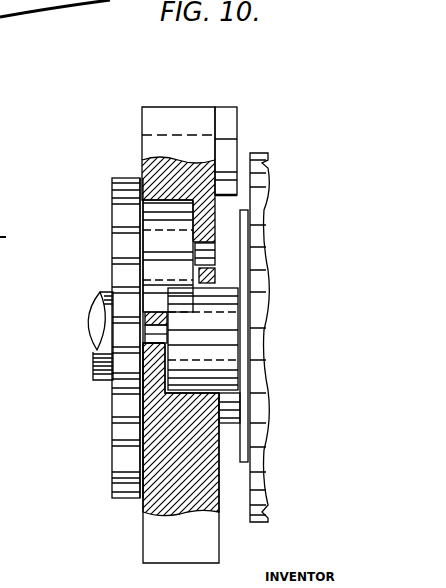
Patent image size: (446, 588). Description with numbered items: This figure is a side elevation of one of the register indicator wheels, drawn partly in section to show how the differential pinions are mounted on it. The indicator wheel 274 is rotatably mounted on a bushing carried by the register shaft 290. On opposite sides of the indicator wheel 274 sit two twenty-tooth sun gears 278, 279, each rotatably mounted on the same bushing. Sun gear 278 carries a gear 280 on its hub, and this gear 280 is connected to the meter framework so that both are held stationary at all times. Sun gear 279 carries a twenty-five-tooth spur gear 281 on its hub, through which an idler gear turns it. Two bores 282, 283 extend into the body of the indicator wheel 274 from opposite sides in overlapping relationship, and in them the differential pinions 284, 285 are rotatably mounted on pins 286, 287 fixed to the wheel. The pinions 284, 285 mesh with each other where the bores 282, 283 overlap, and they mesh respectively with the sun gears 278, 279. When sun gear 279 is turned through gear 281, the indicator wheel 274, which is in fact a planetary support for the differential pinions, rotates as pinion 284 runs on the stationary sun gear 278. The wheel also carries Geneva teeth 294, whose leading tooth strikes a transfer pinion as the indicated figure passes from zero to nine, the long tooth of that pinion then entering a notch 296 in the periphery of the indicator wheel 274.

The indicator wheel 274 is at (180, 538).
The sun gear 278 is at (140, 398).
The sun gear 279 is at (227, 278).
The gear 280 is at (125, 425).
The spur gear 281 is at (248, 183).
The bore 282 is at (165, 175).
The bore 283 is at (245, 427).
The differential pinion 284 is at (160, 240).
The differential pinion 285 is at (208, 338).
The pin 286 is at (217, 247).
The pin 287 is at (152, 328).
The register shaft 290 is at (100, 350).
The Geneva teeth 294 is at (225, 158).
The notch 296 is at (183, 135).